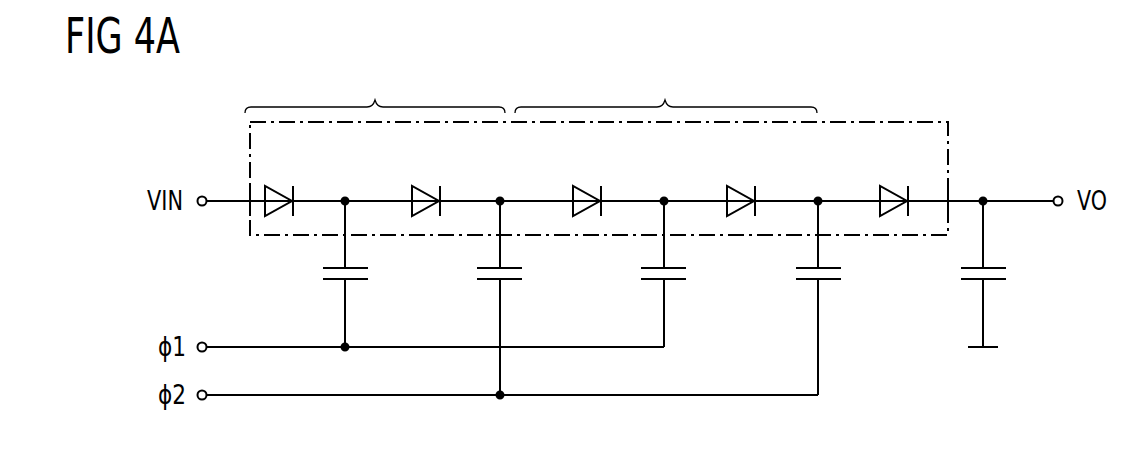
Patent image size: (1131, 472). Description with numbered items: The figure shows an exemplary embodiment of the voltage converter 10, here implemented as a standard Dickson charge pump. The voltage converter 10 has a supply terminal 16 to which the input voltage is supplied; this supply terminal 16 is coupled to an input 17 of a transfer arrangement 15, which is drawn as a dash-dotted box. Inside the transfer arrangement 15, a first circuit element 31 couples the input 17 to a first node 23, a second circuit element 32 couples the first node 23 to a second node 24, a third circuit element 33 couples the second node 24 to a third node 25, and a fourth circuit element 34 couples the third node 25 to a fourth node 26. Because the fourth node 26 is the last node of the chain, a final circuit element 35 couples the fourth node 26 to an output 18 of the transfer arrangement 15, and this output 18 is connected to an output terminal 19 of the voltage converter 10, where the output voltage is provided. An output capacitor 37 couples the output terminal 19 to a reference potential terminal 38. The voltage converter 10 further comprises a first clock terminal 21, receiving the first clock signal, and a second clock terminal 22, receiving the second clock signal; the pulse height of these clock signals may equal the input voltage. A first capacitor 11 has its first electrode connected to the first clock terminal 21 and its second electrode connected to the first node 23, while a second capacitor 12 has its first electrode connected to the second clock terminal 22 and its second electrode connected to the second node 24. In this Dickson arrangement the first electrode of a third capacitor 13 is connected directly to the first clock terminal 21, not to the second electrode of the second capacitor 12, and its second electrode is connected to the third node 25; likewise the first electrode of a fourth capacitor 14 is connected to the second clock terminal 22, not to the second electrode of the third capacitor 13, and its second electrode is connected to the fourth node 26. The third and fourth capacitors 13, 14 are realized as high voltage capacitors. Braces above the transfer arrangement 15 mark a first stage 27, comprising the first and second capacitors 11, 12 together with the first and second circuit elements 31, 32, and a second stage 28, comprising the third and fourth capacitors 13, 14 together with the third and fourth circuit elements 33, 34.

The voltage converter 10 is at (975, 96).
The first capacitor 11 is at (356, 282).
The second capacitor 12 is at (511, 282).
The third capacitor 13 is at (675, 282).
The fourth capacitor 14 is at (829, 282).
The transfer arrangement 15 is at (870, 122).
The supply terminal 16 is at (203, 193).
The input of the transfer arrangement 17 is at (248, 198).
The output of the transfer arrangement 18 is at (950, 198).
The output terminal 19 is at (1059, 193).
The first clock terminal 21 is at (205, 340).
The second clock terminal 22 is at (208, 392).
The first node 23 is at (345, 193).
The second node 24 is at (500, 193).
The third node 25 is at (664, 193).
The fourth node 26 is at (818, 193).
The first stage 27 is at (375, 92).
The second stage 28 is at (666, 92).
The first circuit element 31 is at (283, 193).
The second circuit element 32 is at (432, 193).
The third circuit element 33 is at (591, 193).
The fourth circuit element 34 is at (744, 193).
The final circuit element 35 is at (899, 193).
The output capacitor 37 is at (974, 282).
The reference potential terminal 38 is at (989, 350).